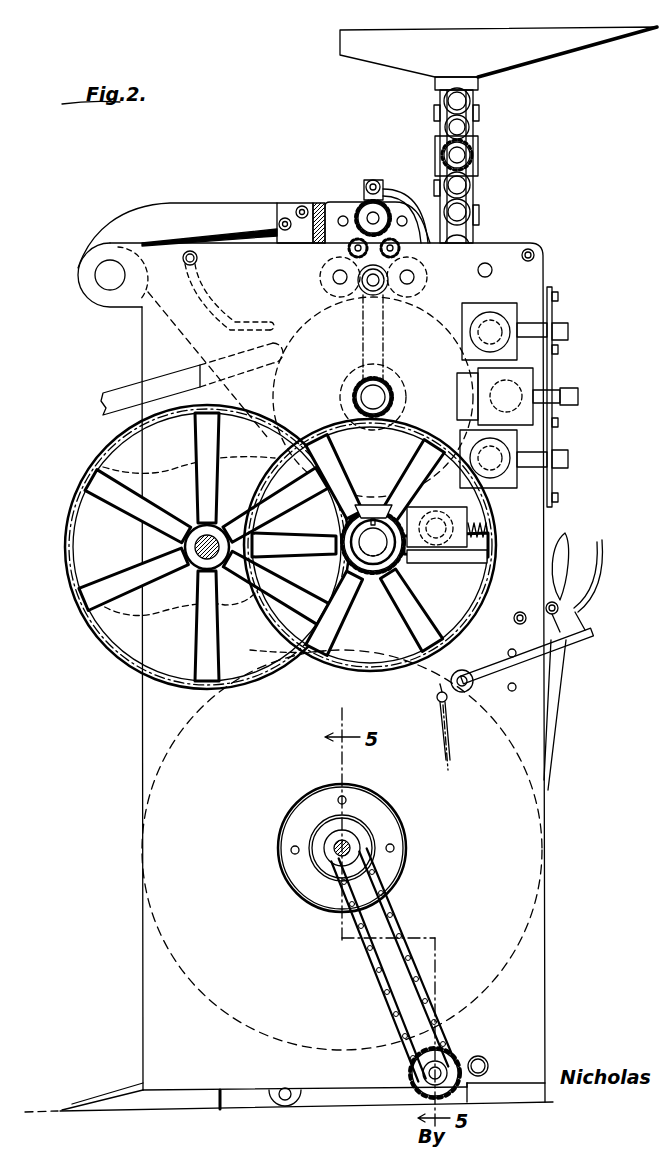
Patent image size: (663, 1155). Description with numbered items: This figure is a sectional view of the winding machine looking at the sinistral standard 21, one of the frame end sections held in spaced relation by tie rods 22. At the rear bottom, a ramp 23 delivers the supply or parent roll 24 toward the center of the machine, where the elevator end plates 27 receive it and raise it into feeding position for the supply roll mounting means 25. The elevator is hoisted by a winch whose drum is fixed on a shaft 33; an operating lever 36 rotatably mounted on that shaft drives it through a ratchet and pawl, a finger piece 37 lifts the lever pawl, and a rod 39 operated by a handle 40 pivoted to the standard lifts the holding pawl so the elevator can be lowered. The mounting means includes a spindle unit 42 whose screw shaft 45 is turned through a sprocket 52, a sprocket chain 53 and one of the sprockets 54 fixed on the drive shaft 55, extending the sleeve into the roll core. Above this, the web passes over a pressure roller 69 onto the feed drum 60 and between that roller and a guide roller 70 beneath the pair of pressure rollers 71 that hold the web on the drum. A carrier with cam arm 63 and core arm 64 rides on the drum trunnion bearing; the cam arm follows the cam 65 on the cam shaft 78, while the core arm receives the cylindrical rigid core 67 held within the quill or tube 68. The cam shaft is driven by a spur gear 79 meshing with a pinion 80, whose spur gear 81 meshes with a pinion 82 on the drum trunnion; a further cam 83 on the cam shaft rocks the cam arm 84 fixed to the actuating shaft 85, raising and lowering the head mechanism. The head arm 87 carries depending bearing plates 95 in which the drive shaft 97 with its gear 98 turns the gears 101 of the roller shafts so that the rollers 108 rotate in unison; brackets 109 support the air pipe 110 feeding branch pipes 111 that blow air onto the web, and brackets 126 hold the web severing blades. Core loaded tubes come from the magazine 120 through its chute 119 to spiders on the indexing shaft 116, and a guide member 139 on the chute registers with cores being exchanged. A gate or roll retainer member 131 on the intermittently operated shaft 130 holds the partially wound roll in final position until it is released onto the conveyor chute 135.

The sinistral end section or standard 21 is at (533, 958).
The tie rods 22 is at (535, 256).
The ramp 23 is at (116, 1090).
The supply or parent roll 24 is at (160, 980).
The supply roll mounting means 25 is at (415, 827).
The end plates 27 is at (311, 1112).
The shaft 33 is at (482, 1057).
The operating lever 36 is at (566, 540).
The finger piece 37 is at (592, 581).
The rod 39 is at (437, 738).
The handle 40 is at (586, 630).
The spindle unit 42 is at (320, 833).
The screw shaft 45 is at (395, 848).
The sprocket 52 is at (330, 858).
The sprocket chain 53 is at (382, 870).
The sprockets 54 is at (450, 1050).
The drive shaft 55 is at (422, 1075).
The feed drum 60 is at (275, 392).
The cam arm 63 is at (312, 405).
The core arm 64 is at (362, 343).
The cam 65 is at (66, 505).
The cylindrical rigid core 67 is at (471, 186).
The quill or tube 68 is at (470, 127).
The pressure roller 69 is at (375, 505).
The guide roller 70 is at (432, 510).
The pressure rollers 71 is at (462, 305).
The cam shaft 78 is at (184, 548).
The spur gear 79 is at (126, 660).
The pinion 80 is at (402, 575).
The spur gear 81 is at (470, 622).
The pinion 82 is at (386, 392).
The cam 83 is at (120, 634).
The cam arm 84 is at (134, 318).
The actuating shaft 85 is at (108, 272).
The sinistral arm 87 is at (211, 212).
The bearing plates 95 is at (350, 226).
The drive shaft 97 is at (372, 217).
The gear 98 is at (360, 208).
The gears 101 is at (346, 252).
The rollers 108 is at (322, 284).
The brackets 109 is at (358, 200).
The pipe 110 is at (373, 181).
The branch pipes 111 is at (418, 194).
The indexing shaft 116 is at (490, 276).
The chute 119 is at (471, 100).
The magazine 120 is at (553, 48).
The brackets 126 is at (279, 229).
The intermittently operated shaft 130 is at (198, 262).
The gate or roll retainer member 131 is at (238, 324).
The conveyor chute 135 is at (116, 388).
The guide member 139 is at (474, 152).